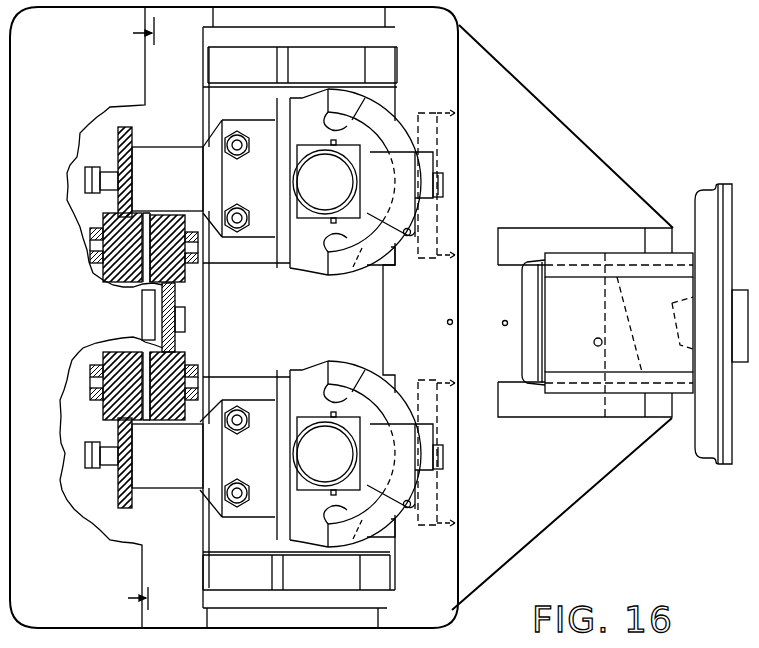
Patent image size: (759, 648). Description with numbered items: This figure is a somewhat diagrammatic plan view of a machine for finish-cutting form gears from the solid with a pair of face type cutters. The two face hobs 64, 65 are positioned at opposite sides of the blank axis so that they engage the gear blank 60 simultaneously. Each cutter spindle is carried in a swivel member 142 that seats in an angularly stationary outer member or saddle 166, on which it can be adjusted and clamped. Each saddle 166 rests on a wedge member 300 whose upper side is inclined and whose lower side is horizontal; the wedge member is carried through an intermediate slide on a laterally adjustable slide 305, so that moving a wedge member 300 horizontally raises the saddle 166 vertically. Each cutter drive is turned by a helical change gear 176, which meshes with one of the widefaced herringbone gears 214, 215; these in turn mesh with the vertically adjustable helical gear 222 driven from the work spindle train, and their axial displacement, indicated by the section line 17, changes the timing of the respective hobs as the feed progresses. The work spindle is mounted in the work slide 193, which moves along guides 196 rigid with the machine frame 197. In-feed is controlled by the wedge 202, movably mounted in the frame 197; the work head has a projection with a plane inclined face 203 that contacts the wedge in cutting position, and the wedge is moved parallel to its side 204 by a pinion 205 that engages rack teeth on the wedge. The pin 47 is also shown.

The section line 17- 17 is at (158, 316).
The pin 47 is at (478, 313).
The gear blank 60 is at (527, 302).
The face hob 64 is at (426, 388).
The face hob 65 is at (427, 117).
The swivel member 142 is at (297, 258).
The outer member 166 is at (230, 160).
The helical change gear 176 is at (118, 136).
The work slide 193 is at (568, 290).
The guides 196 is at (535, 238).
The machine frame 197 is at (572, 493).
The wedge 202 is at (618, 318).
The inclined face 203 is at (683, 345).
The side of wedge 204 is at (605, 362).
The pinion 205 is at (595, 340).
The herringbone gear 214 is at (145, 347).
The herringbone gear 215 is at (145, 278).
The helical gear 222 is at (185, 323).
The wedge member 300 is at (380, 570).
The slide 305 is at (382, 603).